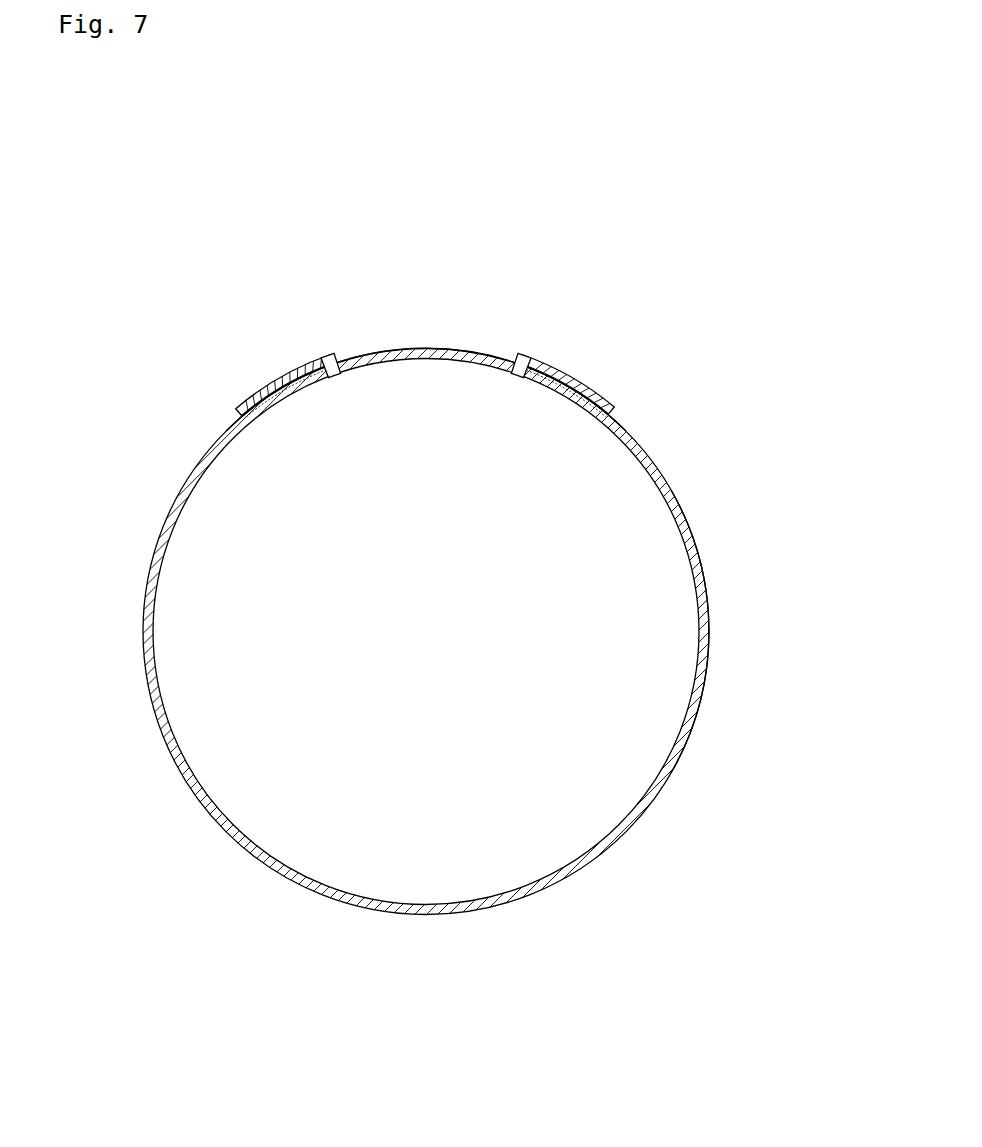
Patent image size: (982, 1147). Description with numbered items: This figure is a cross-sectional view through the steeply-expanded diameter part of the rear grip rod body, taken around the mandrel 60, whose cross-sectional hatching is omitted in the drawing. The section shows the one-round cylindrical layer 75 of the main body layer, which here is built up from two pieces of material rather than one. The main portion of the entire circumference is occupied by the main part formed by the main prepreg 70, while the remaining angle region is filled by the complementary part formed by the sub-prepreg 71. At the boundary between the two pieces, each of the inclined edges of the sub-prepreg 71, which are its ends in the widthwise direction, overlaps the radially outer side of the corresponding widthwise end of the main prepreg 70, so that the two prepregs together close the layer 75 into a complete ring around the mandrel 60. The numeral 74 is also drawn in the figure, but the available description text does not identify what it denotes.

The mandrel 60 is at (610, 772).
The main prepreg 70 is at (397, 914).
The sub-prepreg 71 is at (418, 350).
The engaging pieces 74 is at (274, 380).
The layer 75 is at (693, 510).